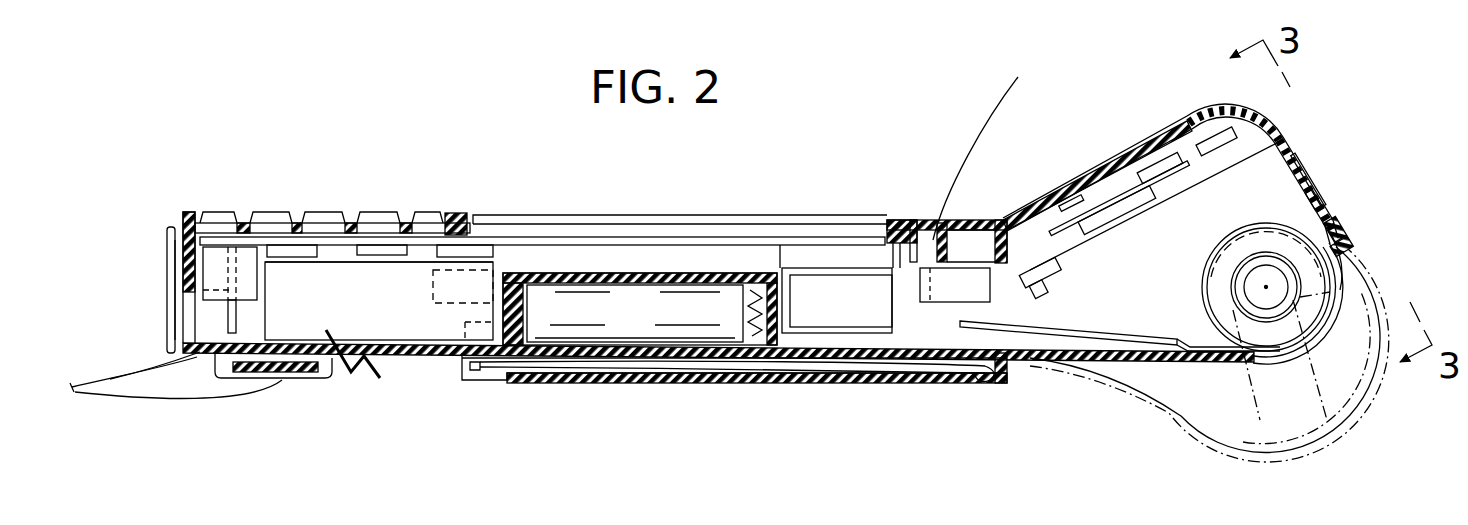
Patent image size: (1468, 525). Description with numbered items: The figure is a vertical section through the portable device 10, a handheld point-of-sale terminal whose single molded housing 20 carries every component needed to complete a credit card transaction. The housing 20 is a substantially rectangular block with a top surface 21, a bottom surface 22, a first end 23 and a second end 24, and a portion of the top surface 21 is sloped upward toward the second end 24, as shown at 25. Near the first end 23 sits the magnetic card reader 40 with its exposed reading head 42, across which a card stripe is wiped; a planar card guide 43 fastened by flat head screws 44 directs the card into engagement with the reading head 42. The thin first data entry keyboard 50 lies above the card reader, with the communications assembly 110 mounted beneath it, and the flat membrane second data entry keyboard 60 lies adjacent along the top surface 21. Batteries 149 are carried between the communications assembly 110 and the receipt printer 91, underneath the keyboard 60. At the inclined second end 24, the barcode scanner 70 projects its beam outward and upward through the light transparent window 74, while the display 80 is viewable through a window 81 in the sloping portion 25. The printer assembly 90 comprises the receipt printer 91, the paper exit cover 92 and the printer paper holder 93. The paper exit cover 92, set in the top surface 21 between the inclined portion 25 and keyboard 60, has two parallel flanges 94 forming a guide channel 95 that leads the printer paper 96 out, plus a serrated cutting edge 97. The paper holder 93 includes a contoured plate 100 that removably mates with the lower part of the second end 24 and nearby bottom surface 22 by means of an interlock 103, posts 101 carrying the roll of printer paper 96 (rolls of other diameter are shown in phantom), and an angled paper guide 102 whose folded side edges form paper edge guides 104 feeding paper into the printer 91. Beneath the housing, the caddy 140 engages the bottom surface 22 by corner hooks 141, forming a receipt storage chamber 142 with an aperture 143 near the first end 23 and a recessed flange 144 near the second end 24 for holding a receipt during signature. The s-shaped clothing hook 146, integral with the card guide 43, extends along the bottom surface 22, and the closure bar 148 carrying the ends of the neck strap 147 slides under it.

The portable device 10 is at (488, 140).
The housing 20 is at (408, 360).
The top surface 21 is at (457, 222).
The bottom surface 22 is at (440, 352).
The first end 23 is at (170, 240).
The second end 24 is at (1317, 210).
The sloped portion 25 is at (1033, 206).
The magnetic card reader 40 is at (234, 318).
The reading head 42 is at (188, 313).
The card guide 43 is at (172, 278).
The flat head screws 44 is at (182, 378).
The first data entry keyboard 50 is at (350, 212).
The second data entry keyboard 60 is at (690, 215).
The barcode scanner 70 is at (1255, 155).
The light transparent window 74 is at (1307, 157).
The display 80 is at (1183, 150).
The window 81 is at (1102, 172).
The printer assembly 90 is at (903, 324).
The receipt printer 91 is at (975, 290).
The paper exit cover 92 is at (905, 216).
The printer paper holder 93 is at (1195, 366).
The parallel flanges 94 is at (922, 270).
The guide channel 95 is at (940, 287).
The printer paper 96 is at (997, 110).
The serrated cutting edge 97 is at (924, 235).
The plate 100 is at (1327, 247).
The posts 101 is at (1330, 292).
The angled paper guide 102 is at (1135, 368).
The interlock 103 is at (1330, 200).
The paper edge guides 104 is at (1115, 340).
The communications assembly 110 is at (332, 335).
The caddy 140 is at (634, 386).
The corner hooks 141 is at (460, 322).
The receipt storage chamber 142 is at (537, 366).
The aperture 143 is at (493, 380).
The recessed flange 144 is at (985, 380).
The clothing hook 146 is at (306, 380).
The neck strap 147 is at (70, 394).
The closure bar 148 is at (265, 384).
The batteries 149 is at (745, 325).